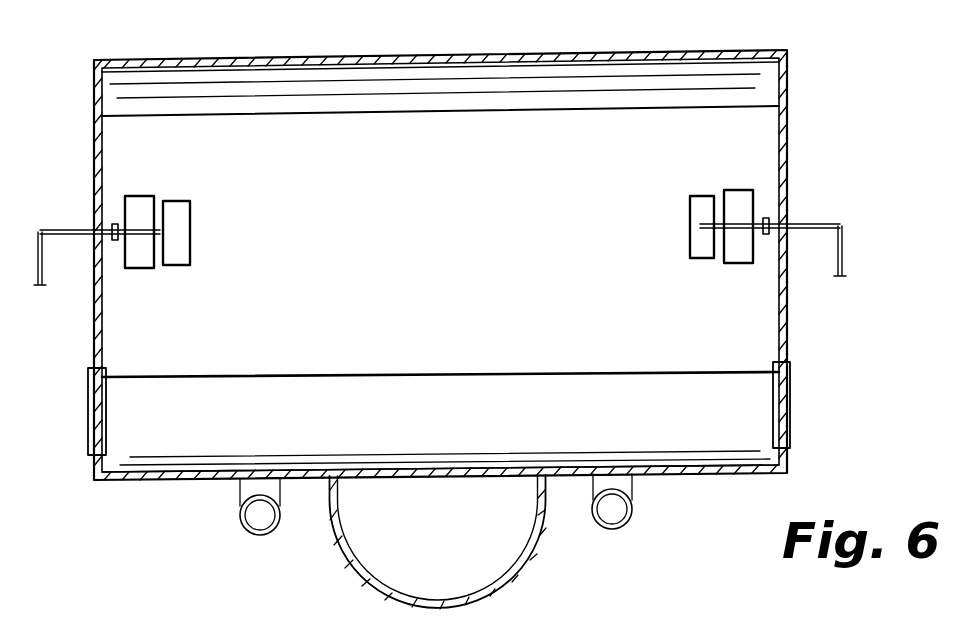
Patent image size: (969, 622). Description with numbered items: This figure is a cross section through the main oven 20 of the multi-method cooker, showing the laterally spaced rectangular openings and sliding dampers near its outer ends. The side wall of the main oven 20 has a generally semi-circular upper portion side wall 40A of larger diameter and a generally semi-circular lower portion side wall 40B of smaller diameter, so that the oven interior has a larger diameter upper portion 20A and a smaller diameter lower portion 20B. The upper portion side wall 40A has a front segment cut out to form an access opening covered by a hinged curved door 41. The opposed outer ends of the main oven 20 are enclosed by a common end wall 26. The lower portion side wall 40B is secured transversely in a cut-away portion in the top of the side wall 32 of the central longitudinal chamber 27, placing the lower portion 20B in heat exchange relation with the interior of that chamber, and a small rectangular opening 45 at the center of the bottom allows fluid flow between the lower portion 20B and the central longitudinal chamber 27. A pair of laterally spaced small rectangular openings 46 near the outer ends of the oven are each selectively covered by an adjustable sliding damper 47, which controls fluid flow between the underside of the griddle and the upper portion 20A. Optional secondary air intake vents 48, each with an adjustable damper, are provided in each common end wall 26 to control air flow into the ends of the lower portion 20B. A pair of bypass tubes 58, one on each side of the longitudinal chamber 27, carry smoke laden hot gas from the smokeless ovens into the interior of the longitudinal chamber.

The main oven 20 is at (487, 51).
The larger diameter upper portion 20A is at (416, 227).
The smaller diameter lower portion 20B is at (442, 426).
The common end wall 26 is at (94, 153).
The central longitudinal chamber 27 is at (355, 572).
The side wall 32 is at (516, 571).
The upper portion side wall 40A is at (140, 60).
The lower portion side wall 40B is at (131, 482).
The curved door 41 is at (609, 621).
The rectangular opening 45 is at (438, 476).
The rectangular openings 46 is at (190, 229).
The sliding damper 47 is at (138, 200).
The secondary air intake vents 48 is at (88, 412).
The bypass tubes 58 is at (255, 520).